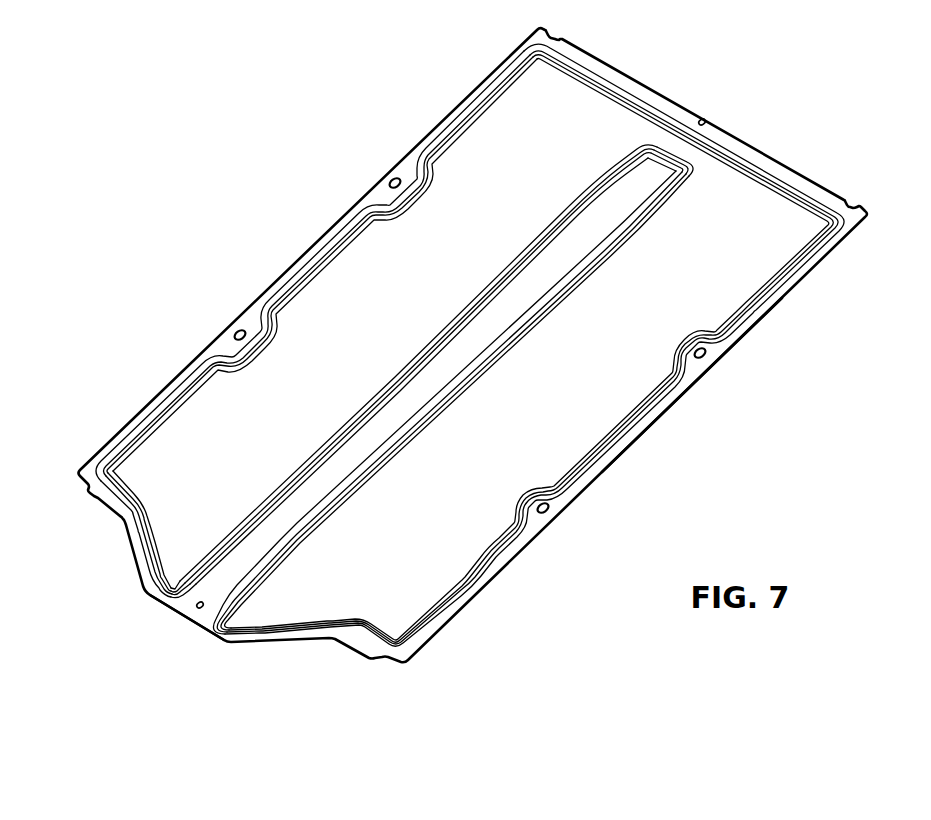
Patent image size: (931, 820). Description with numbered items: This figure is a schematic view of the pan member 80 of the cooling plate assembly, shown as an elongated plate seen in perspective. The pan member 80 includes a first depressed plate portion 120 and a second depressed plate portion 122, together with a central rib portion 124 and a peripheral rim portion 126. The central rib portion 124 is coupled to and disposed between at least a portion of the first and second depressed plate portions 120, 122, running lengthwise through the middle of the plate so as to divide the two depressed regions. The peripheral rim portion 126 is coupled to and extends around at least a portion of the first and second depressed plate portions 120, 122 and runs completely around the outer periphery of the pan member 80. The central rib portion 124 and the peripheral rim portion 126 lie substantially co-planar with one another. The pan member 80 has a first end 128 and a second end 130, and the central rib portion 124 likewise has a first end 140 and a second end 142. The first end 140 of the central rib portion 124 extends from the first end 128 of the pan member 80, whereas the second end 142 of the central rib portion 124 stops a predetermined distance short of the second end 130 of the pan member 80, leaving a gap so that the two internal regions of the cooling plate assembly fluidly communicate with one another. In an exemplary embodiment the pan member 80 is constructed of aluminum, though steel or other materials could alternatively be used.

The pan member 80 is at (458, 356).
The second end 130 is at (723, 122).
The peripheral rim portion 126 is at (659, 417).
The first end 128 is at (218, 638).
The first depressed plate portion 120 is at (307, 603).
The central rib portion 124 is at (436, 332).
The second end 142 is at (673, 152).
The first end 140 is at (183, 596).
The second depressed plate portion 122 is at (160, 480).